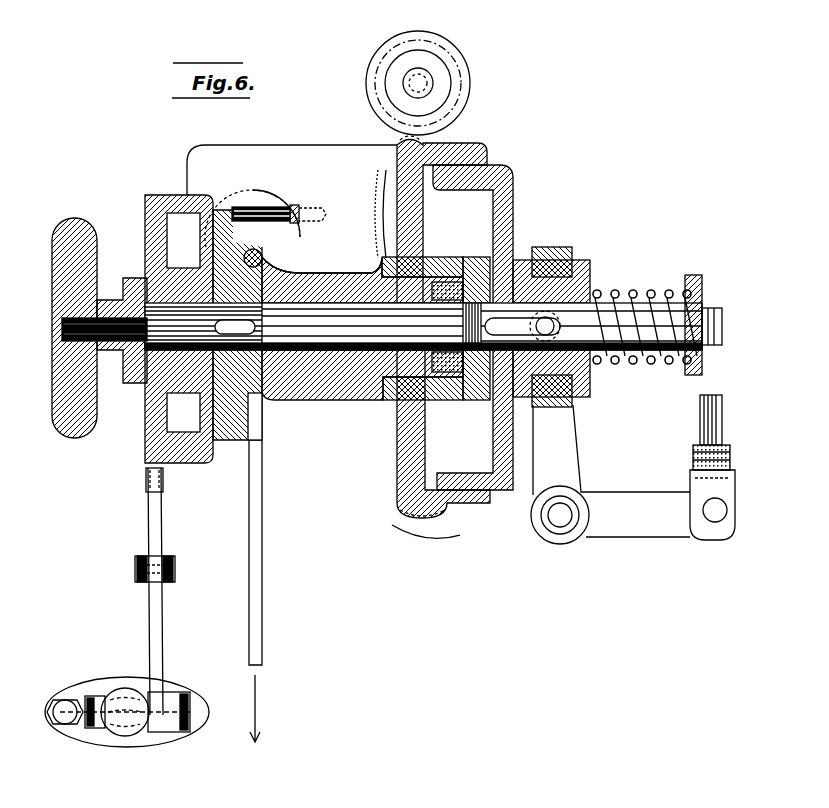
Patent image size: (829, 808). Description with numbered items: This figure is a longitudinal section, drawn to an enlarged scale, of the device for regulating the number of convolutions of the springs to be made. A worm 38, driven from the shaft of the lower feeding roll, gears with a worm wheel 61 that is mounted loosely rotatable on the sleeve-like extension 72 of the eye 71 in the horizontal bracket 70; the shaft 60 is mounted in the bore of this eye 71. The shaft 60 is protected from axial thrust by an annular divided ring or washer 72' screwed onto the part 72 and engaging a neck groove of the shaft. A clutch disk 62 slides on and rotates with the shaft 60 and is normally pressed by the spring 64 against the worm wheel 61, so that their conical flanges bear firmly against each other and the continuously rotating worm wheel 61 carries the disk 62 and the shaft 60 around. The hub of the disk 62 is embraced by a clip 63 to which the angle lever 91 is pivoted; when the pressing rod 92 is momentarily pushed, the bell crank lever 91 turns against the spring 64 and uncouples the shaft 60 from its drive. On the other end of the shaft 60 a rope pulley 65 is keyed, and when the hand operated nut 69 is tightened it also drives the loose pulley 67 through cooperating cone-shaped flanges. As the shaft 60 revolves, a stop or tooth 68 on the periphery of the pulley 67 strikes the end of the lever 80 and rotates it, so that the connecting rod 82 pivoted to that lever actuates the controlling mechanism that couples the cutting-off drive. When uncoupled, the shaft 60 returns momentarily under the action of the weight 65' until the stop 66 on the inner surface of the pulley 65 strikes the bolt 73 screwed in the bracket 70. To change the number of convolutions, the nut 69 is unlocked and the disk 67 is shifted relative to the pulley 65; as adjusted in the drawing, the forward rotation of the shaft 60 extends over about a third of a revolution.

The worm 38 is at (432, 72).
The shaft 60 is at (353, 350).
The worm wheel 61 is at (397, 148).
The clutch disk 62 is at (505, 183).
The clip 63 is at (566, 252).
The spring 64 is at (606, 287).
The rope pulley 65 is at (240, 433).
The weight 65' is at (275, 591).
The stop 66 is at (228, 200).
The loose pulley 67 is at (155, 200).
The stop or tooth 68 is at (146, 466).
The hand operated nut 69 is at (75, 375).
The horizontal bracket 70 is at (292, 209).
The eye 71 is at (302, 400).
The sleeve-like extension 72 is at (415, 350).
The annular divided ring or washer 72' is at (526, 305).
The bolt 73 is at (262, 213).
The lever 80 is at (162, 535).
The connecting rod 82 is at (145, 584).
The angle lever 91 is at (572, 447).
The pressing rod 92 is at (728, 440).